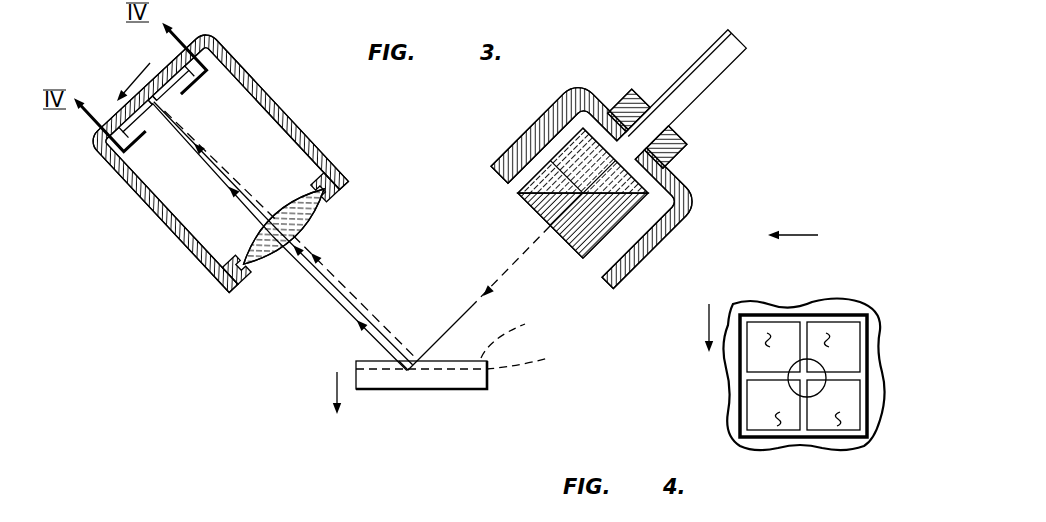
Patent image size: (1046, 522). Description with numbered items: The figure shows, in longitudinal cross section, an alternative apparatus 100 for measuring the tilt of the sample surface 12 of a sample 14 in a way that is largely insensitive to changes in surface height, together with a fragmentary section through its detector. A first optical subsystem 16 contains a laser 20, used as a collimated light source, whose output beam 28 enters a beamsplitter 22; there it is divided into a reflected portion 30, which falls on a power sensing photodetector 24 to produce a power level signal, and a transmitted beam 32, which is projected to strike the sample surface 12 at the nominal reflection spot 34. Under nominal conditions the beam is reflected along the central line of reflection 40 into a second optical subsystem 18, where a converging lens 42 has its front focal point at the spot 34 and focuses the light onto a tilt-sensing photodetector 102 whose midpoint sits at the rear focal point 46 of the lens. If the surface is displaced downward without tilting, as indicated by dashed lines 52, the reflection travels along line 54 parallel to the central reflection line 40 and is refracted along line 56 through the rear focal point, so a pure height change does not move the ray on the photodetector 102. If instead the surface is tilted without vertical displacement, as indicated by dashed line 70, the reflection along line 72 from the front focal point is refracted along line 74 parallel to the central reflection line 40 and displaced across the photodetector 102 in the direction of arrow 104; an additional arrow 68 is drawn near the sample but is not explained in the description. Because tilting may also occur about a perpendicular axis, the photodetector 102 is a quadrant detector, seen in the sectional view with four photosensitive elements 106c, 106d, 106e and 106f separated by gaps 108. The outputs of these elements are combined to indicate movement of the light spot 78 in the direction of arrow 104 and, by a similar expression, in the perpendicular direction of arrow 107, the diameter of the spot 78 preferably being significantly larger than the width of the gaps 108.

In FIG. 3, the sample surface 12 is at (486, 361).
In FIG. 3, the sample 14 is at (437, 395).
In FIG. 3, the first optical subsystem 16 is at (516, 128).
In FIG. 3, the second optical subsystem 18 is at (312, 122).
In FIG. 3, the laser 20 is at (680, 86).
In FIG. 3, the beamsplitter 22 is at (540, 216).
In FIG. 3, the power sensing photodetector 24 is at (506, 178).
In FIG. 3, the output beam 28 is at (623, 145).
In FIG. 3, the reflected portion 30 is at (550, 150).
In FIG. 3, the transmitted beam 32 is at (516, 260).
In FIG. 3, the nominal reflection spot 34 is at (414, 357).
In FIG. 3, the central line of reflection 40 is at (345, 290).
In FIG. 3, the converging lens 42 is at (270, 265).
In FIG. 3, the rear focal point 46 is at (158, 104).
In FIG. 3, the dashed lines 52 is at (462, 353).
In FIG. 3, the line 54 is at (346, 310).
In FIG. 3, the line 56 is at (185, 150).
In FIG. 3, the direction of mirror movement 68 is at (328, 395).
In FIG. 3, the dashed line 70 is at (515, 333).
In FIG. 3, the line 72 is at (356, 324).
In FIG. 3, the line 74 is at (210, 176).
In FIG. 4, the spot 78 is at (820, 365).
In FIG. 3, the alternative apparatus 100 is at (160, 372).
In FIG. 3, the tilt-sensing photodetector 102 is at (186, 93).
In FIG. 4, the tilt-sensing photodetector 102 is at (745, 398).
In FIG. 3, the arrow 104 is at (130, 83).
In FIG. 4, the arrow 104 is at (707, 319).
In FIG. 4, the photosensitive element 106c is at (777, 427).
In FIG. 4, the photosensitive element 106d is at (837, 427).
In FIG. 4, the photosensitive element 106e is at (767, 333).
In FIG. 4, the photosensitive element 106f is at (826, 333).
In FIG. 4, the arrow 107 is at (803, 234).
In FIG. 4, the gaps 108 is at (748, 377).